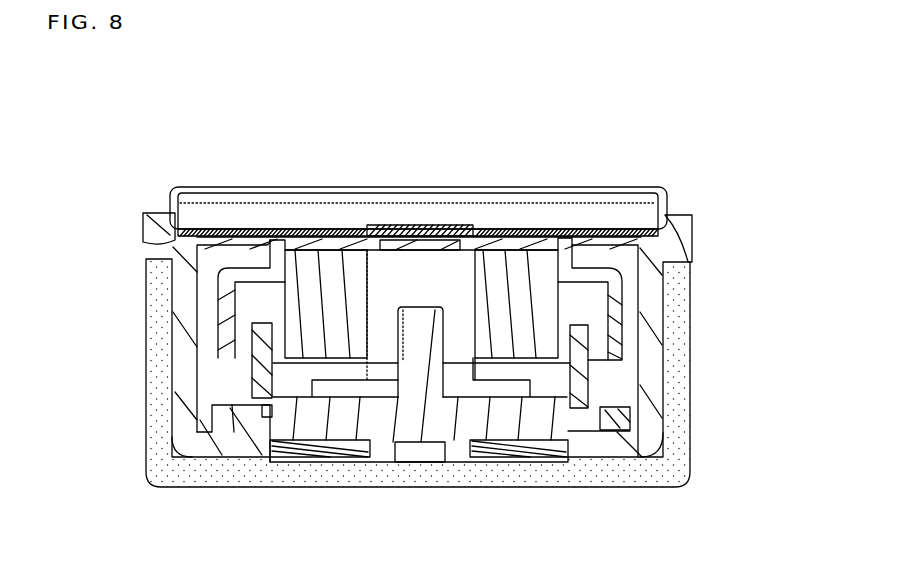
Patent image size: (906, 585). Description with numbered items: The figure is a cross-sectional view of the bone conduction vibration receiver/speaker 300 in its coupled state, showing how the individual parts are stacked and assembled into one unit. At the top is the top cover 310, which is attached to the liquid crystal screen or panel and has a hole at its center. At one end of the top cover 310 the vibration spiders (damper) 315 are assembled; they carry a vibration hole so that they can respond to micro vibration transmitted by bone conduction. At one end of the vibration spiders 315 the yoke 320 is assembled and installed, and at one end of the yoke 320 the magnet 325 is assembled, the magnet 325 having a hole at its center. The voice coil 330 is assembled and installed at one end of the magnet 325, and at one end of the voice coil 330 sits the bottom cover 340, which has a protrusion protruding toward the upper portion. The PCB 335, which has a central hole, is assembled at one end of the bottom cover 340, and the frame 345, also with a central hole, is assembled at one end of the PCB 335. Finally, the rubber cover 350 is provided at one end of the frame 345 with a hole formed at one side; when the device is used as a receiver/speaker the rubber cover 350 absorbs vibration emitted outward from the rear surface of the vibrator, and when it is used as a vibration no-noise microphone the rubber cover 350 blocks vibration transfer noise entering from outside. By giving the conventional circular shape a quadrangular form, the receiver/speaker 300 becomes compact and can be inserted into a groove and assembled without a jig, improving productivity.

The bone conduction vibration receiver/speaker 300 is at (415, 140).
The top cover 310 is at (283, 186).
The vibration spiders (damper) 315 is at (603, 228).
The yoke 320 is at (218, 310).
The magnet 325 is at (295, 347).
The voice coil 330 is at (598, 387).
The PCB 335 is at (566, 463).
The bottom cover 340 is at (622, 430).
The frame 345 is at (160, 252).
The rubber cover 350 is at (468, 478).